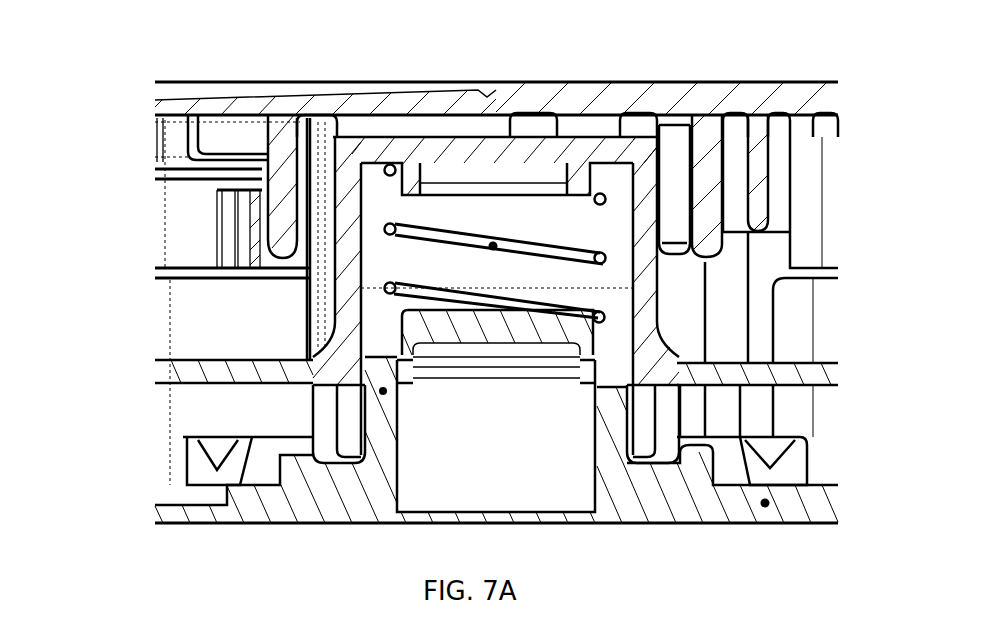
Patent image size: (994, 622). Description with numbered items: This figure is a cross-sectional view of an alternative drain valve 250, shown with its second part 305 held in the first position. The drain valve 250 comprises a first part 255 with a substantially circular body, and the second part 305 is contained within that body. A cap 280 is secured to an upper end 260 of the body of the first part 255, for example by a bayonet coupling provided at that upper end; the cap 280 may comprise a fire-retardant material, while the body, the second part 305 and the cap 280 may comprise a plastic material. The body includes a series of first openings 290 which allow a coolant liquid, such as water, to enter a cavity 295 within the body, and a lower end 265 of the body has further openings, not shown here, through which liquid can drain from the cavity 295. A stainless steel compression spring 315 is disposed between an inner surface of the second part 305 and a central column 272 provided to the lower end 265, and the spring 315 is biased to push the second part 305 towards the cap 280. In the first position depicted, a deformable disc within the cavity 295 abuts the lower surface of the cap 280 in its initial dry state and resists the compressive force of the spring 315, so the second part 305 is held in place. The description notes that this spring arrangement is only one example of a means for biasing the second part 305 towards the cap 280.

The drain valve 250 is at (108, 91).
The first part 255 is at (763, 505).
The upper end 260 is at (424, 52).
The lower end 265 is at (282, 547).
The central column 272 is at (383, 391).
The cap 280 is at (663, 100).
The first openings 290 is at (183, 212).
The cavity 295 is at (223, 327).
The second part 305 is at (710, 373).
The compression spring 315 is at (497, 247).